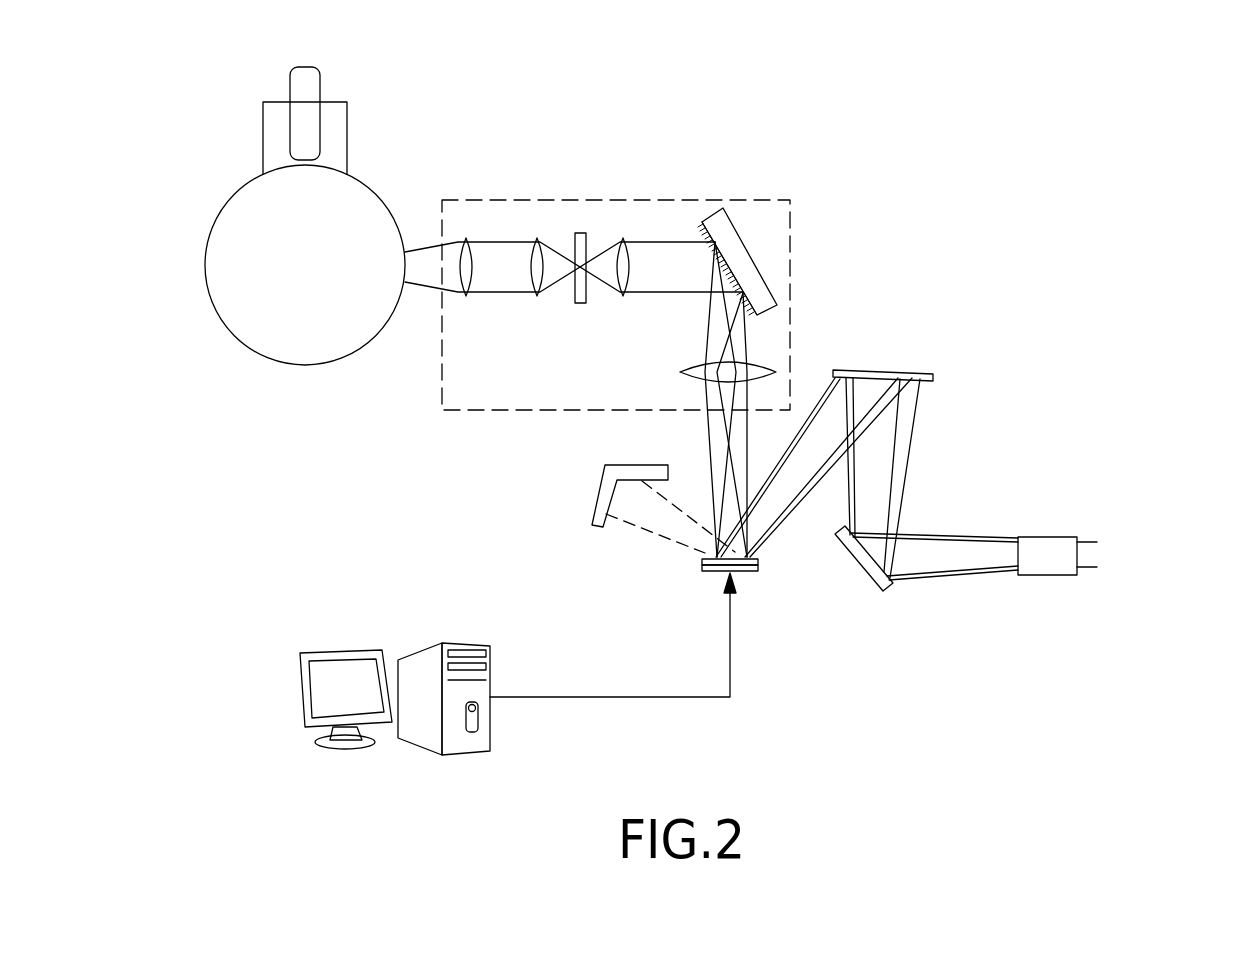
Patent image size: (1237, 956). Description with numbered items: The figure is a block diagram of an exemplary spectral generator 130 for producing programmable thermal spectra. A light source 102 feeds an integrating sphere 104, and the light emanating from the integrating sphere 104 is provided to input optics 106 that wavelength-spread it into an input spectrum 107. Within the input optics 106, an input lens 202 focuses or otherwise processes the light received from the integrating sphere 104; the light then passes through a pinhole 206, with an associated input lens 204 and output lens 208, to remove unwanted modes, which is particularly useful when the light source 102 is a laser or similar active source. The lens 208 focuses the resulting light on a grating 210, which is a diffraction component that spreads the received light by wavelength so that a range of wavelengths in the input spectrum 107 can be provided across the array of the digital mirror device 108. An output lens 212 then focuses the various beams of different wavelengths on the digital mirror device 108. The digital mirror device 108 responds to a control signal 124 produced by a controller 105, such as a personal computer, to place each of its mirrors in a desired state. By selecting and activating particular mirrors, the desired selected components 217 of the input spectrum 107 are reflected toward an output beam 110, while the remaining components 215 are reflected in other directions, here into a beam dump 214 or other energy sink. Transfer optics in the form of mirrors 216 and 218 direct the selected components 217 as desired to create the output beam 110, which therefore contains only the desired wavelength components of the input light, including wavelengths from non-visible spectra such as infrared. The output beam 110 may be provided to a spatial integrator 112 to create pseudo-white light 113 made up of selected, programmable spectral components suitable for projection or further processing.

The light source 102 is at (308, 82).
The integrating sphere 104 is at (343, 345).
The controller 105 is at (487, 718).
The input optics 106 is at (507, 200).
The input spectrum 107 is at (737, 450).
The digital mirror device 108 is at (757, 567).
The output beam 110 is at (973, 553).
The spatial integrator 112 is at (1048, 561).
The pseudo-white light 113 is at (1112, 555).
The control signal 124 is at (625, 697).
The spectral generator 130 is at (853, 140).
The input lens 202 is at (468, 296).
The input lens 204 is at (540, 296).
The pinhole 206 is at (585, 302).
The output lens 208 is at (627, 296).
The grating 210 is at (753, 258).
The output lens 212 is at (768, 368).
The beam dump 214 is at (598, 497).
The remaining components 215 is at (641, 514).
The transfer optics mirror 216 is at (890, 368).
The selected components 217 is at (767, 517).
The transfer optics mirror 218 is at (855, 567).